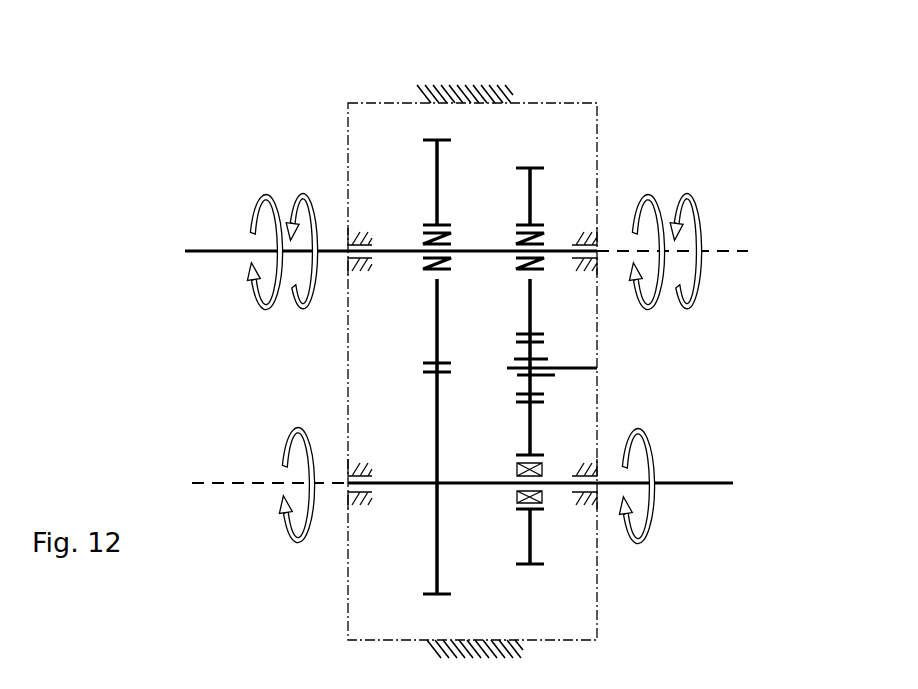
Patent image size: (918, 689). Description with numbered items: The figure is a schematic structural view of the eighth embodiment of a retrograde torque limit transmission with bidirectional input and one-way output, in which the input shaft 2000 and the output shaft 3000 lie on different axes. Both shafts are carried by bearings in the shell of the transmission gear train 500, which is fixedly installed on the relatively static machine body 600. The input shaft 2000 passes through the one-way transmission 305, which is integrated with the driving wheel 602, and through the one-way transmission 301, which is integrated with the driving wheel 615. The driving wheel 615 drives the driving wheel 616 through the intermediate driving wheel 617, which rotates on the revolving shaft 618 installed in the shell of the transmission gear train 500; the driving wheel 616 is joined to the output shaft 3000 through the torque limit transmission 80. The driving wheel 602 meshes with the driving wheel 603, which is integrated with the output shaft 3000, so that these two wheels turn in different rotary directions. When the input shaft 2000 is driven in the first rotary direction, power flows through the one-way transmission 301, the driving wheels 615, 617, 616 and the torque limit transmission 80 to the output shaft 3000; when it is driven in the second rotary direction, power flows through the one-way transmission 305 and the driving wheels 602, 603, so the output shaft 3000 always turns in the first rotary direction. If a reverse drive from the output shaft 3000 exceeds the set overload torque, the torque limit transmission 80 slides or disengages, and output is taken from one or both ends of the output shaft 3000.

The shell of the transmission gear train 500 is at (345, 168).
The machine body 600 is at (500, 90).
The input shaft 2000 is at (235, 248).
The output shaft 3000 is at (258, 482).
The driving wheel 602 is at (435, 172).
The driving wheel 603 is at (437, 533).
The one-way transmission 305 is at (443, 234).
The one-way transmission 301 is at (541, 234).
The driving wheel 615 is at (535, 168).
The driving wheel 617 is at (515, 394).
The revolving shaft 618 is at (569, 372).
The torque limit transmission 80 is at (518, 469).
The driving wheel 616 is at (530, 541).